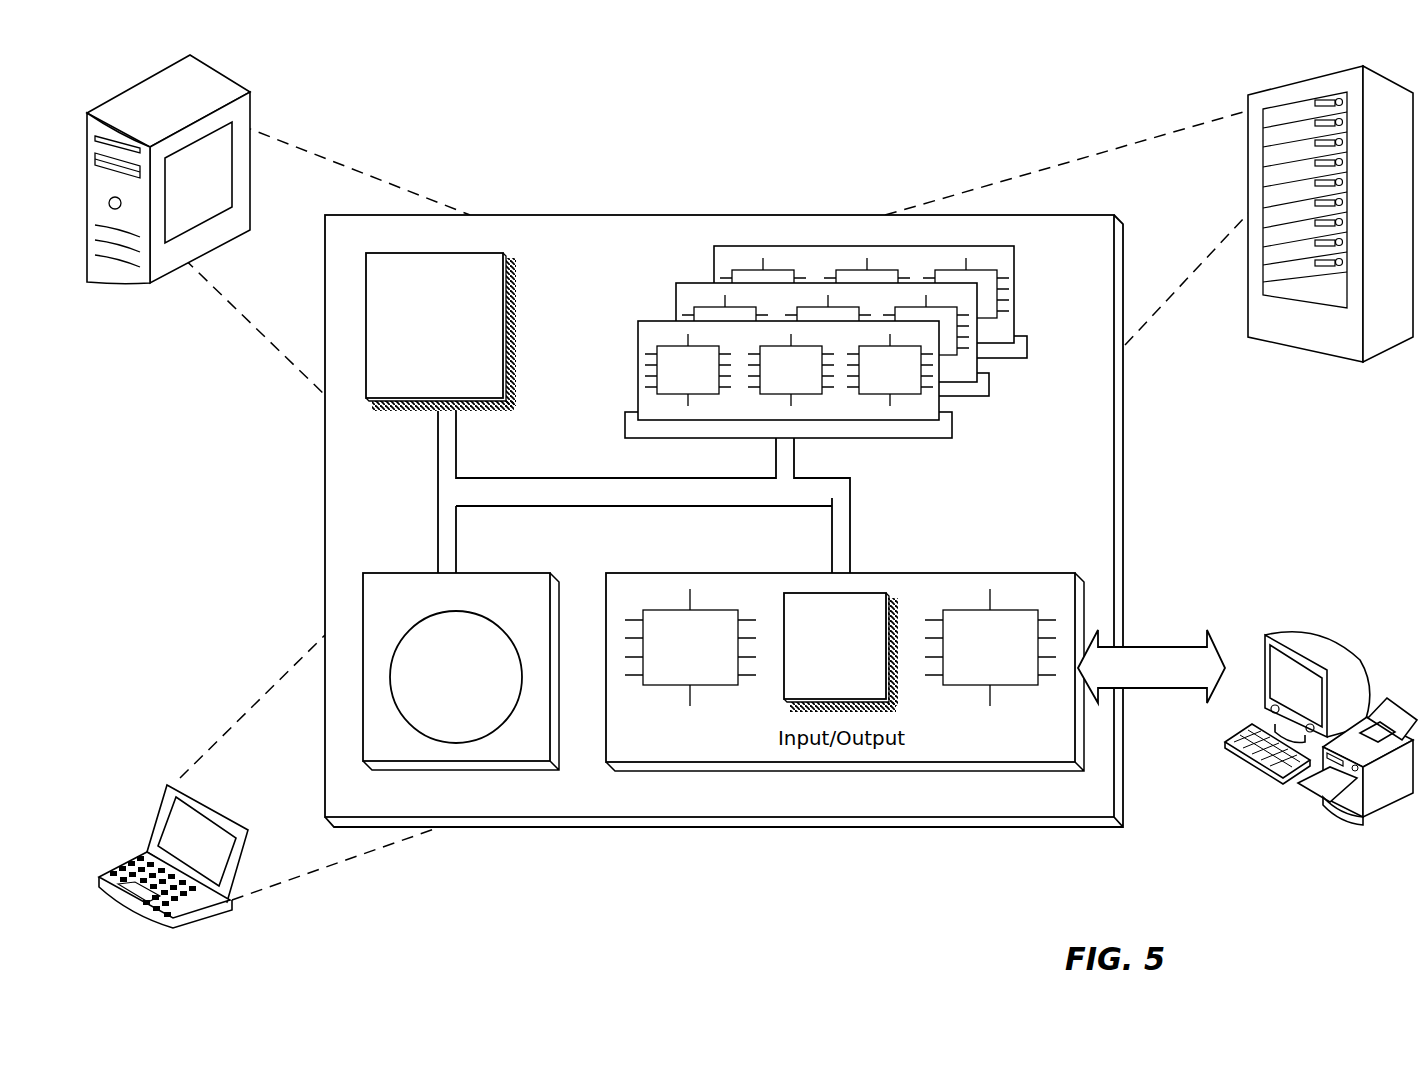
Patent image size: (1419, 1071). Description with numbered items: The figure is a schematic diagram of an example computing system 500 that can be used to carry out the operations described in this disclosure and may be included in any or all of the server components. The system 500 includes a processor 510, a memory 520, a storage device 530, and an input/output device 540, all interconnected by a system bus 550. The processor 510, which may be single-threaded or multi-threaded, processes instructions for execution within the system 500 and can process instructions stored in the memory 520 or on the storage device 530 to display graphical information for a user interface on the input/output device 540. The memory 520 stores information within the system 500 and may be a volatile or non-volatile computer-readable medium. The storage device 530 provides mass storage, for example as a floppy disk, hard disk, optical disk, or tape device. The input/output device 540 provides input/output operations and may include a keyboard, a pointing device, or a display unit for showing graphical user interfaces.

The computing system 500 is at (535, 130).
The processor 510 is at (493, 390).
The memory 520 is at (1021, 400).
The storage device 530 is at (539, 752).
The input/output device 540 is at (1266, 641).
The system bus 550 is at (640, 497).